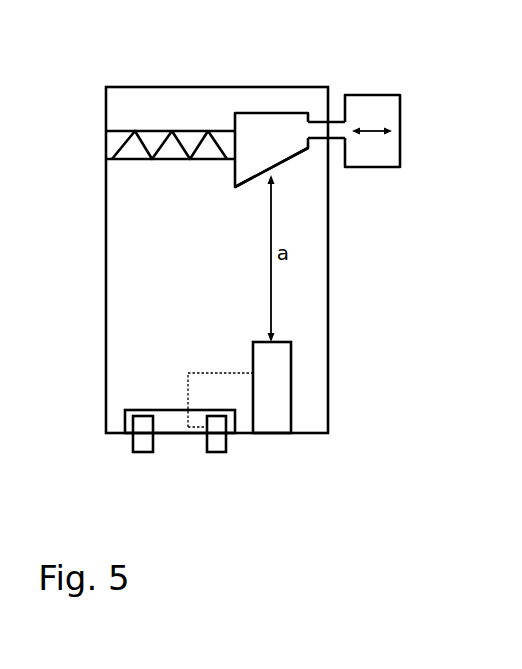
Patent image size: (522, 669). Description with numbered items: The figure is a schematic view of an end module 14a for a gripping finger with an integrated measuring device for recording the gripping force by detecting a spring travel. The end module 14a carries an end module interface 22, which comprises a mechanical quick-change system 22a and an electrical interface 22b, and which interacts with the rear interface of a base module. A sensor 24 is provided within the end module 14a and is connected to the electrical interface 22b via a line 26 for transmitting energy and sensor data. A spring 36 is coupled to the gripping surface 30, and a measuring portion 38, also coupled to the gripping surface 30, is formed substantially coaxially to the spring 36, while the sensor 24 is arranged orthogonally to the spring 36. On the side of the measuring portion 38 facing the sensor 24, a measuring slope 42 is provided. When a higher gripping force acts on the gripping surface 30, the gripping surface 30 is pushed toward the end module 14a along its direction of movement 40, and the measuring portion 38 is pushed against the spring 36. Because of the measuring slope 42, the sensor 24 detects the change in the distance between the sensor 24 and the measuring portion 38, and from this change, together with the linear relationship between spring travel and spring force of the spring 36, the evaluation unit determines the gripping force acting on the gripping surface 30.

The end module 14a is at (97, 6).
The end module interface 22 is at (167, 410).
The mechanical quick-change system 22a is at (147, 452).
The electrical interface 22b is at (217, 452).
The sensor 24 is at (275, 382).
The line 26 is at (187, 382).
The gripping surface 30 is at (389, 146).
The spring 36 is at (171, 128).
The measuring portion 38 is at (268, 122).
The direction of movement 40 is at (371, 128).
The measuring slope 42 is at (282, 163).